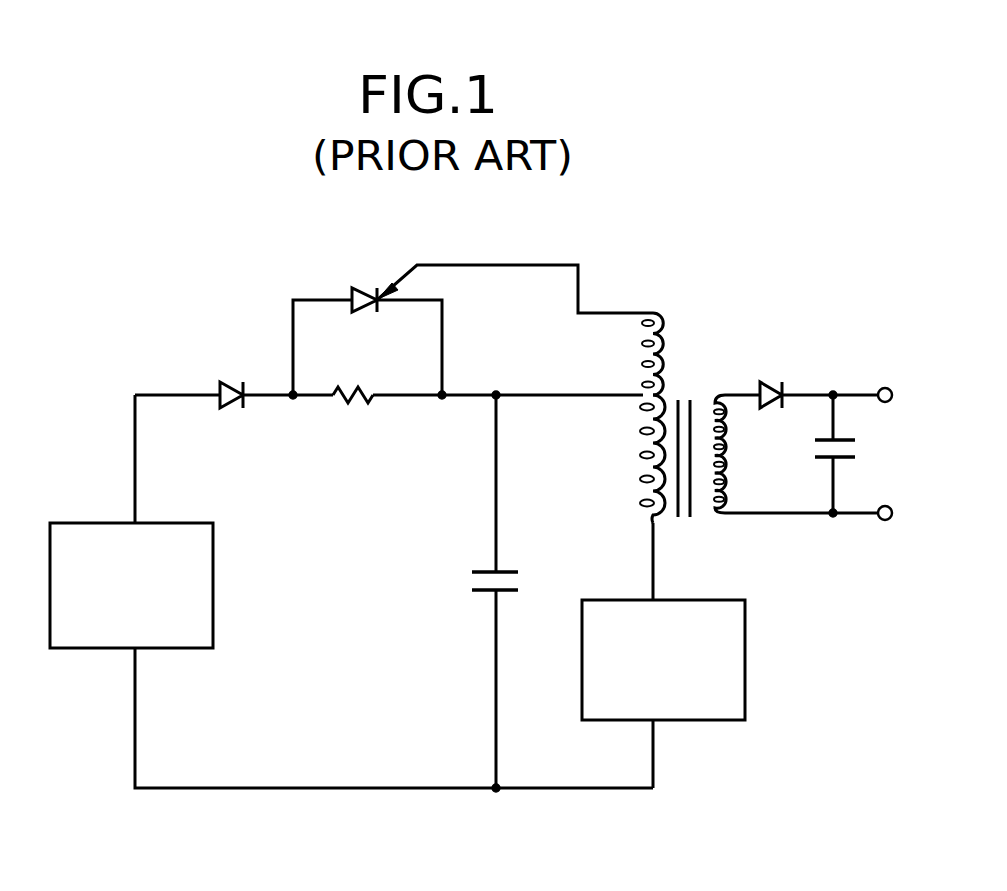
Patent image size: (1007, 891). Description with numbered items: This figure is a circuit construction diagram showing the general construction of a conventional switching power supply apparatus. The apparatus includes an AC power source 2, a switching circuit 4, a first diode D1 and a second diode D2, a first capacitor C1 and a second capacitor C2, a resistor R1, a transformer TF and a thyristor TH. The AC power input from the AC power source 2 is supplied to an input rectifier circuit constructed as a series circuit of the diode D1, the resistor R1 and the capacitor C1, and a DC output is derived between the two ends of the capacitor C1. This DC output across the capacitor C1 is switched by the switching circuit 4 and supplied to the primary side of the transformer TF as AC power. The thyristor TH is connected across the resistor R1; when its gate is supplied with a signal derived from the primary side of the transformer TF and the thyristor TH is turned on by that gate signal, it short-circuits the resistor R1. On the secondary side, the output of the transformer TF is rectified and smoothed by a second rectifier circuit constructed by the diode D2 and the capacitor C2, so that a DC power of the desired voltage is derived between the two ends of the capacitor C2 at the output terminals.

The AC power source 2 is at (173, 523).
The switching circuit 4 is at (745, 655).
The diode D1 is at (228, 372).
The resistor R1 is at (353, 417).
The thyristor TH is at (368, 276).
The capacitor C1 is at (470, 583).
The transformer TF is at (683, 399).
The diode D2 is at (776, 374).
The capacitor C2 is at (860, 451).